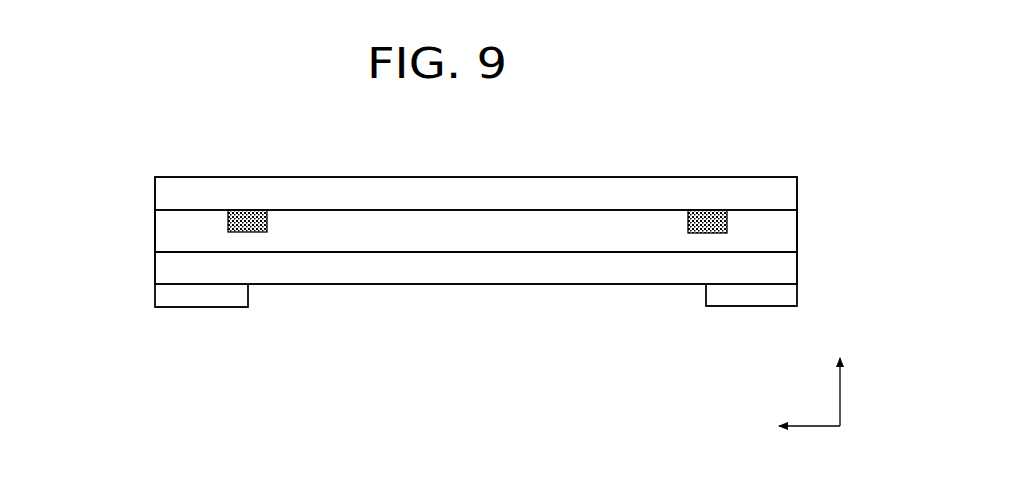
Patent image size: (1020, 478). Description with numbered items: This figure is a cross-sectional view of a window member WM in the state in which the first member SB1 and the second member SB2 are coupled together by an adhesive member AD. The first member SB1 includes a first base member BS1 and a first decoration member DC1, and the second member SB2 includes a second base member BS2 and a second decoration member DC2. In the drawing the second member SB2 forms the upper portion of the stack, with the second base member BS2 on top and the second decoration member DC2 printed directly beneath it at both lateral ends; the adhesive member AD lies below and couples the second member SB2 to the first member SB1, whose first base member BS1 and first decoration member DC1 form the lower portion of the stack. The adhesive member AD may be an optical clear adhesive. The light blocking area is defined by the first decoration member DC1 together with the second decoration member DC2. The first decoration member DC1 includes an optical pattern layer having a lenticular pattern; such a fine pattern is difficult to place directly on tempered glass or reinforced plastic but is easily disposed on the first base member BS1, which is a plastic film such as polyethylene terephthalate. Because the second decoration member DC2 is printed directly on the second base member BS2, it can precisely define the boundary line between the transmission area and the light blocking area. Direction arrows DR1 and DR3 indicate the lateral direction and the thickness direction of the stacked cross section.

The window member WM is at (722, 160).
The second member SB2 is at (77, 188).
The second base member BS2 is at (162, 195).
The second decoration member DC2 is at (228, 219).
The adhesive member AD is at (785, 230).
The first member SB1 is at (77, 262).
The first base member BS1 is at (162, 268).
The first decoration member DC1 is at (162, 295).
The third direction DR3 is at (839, 379).
The first direction DR1 is at (787, 426).